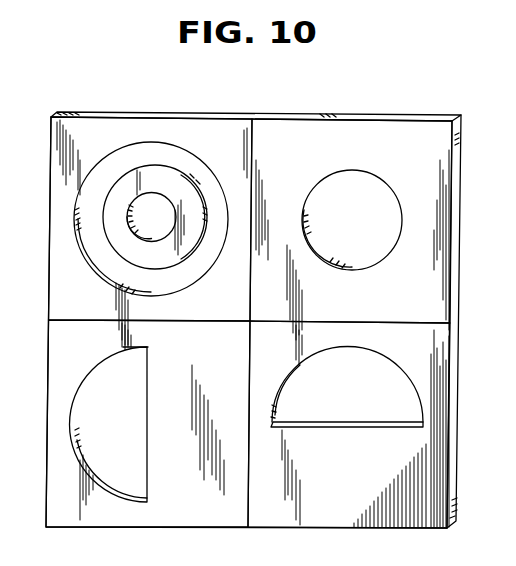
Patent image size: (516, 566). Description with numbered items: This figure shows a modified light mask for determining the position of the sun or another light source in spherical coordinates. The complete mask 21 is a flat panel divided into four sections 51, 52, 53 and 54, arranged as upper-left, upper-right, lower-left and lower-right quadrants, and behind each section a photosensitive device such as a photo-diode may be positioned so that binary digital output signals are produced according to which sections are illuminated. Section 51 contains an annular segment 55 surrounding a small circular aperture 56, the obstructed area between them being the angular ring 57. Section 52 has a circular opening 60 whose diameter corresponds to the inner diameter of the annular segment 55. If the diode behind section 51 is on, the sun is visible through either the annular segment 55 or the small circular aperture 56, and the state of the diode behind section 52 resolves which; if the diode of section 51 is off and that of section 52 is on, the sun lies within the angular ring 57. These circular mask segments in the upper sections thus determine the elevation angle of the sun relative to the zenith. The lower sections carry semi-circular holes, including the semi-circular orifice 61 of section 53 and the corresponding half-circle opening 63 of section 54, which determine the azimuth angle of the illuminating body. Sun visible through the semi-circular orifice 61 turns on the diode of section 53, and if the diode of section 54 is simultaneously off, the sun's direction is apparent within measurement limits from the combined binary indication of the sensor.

The complete mask 21 is at (315, 115).
The section 51 is at (63, 162).
The section 52 is at (443, 167).
The section 53 is at (63, 362).
The section 54 is at (440, 370).
The annular segment 55 is at (193, 267).
The small circular aperture 56 is at (163, 225).
The angular ring 57 is at (155, 266).
The opening 60 is at (358, 232).
The semi-circular orifice 61 is at (123, 437).
The half-disk element 63 is at (358, 404).